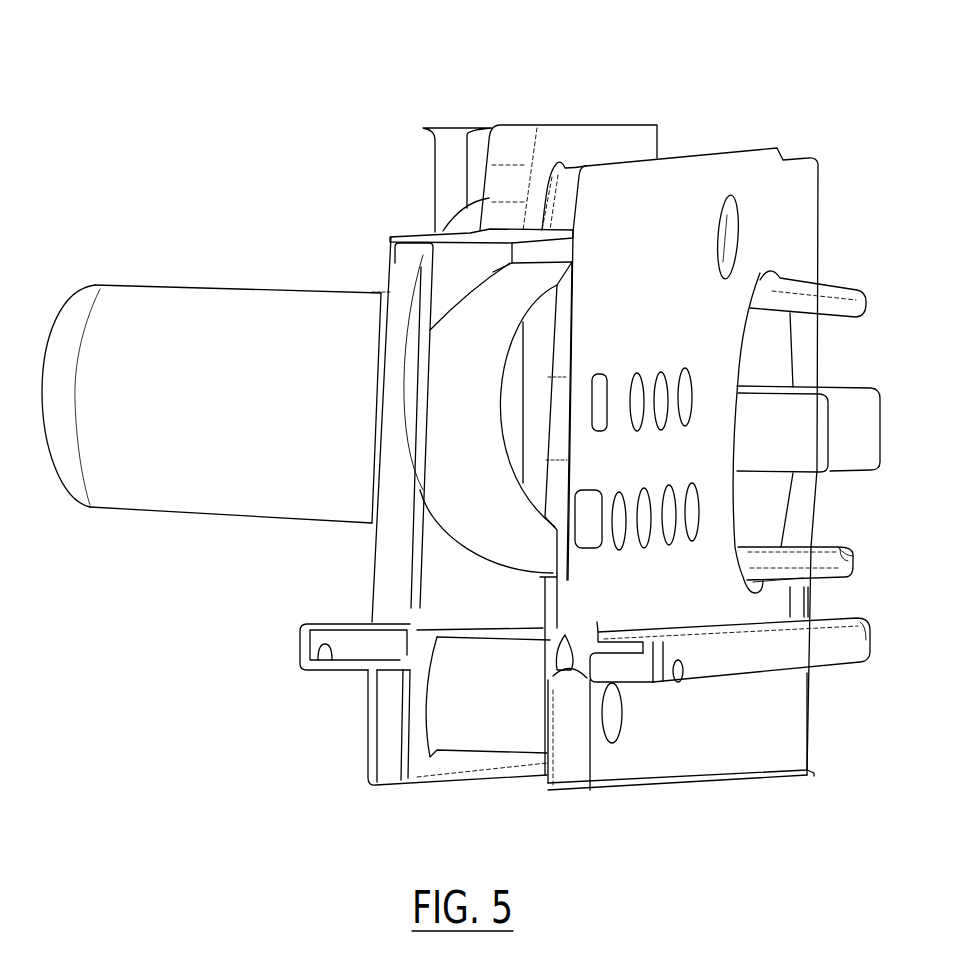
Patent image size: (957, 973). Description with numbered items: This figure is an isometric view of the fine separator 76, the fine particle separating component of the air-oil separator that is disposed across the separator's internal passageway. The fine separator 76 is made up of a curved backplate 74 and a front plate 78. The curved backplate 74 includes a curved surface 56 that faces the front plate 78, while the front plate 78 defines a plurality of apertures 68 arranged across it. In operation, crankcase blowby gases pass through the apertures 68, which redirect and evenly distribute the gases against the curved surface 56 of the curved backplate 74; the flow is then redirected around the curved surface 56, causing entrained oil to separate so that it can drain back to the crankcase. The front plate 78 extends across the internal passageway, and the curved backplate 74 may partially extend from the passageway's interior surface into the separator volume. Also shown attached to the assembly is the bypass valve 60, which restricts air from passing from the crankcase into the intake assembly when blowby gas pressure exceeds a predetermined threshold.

The curved surface 56 is at (472, 446).
The bypass valve 60 is at (234, 411).
The aperture 68 is at (637, 376).
The curved backplate 74 is at (459, 257).
The fine separator 76 is at (737, 86).
The front plate 78 is at (625, 187).